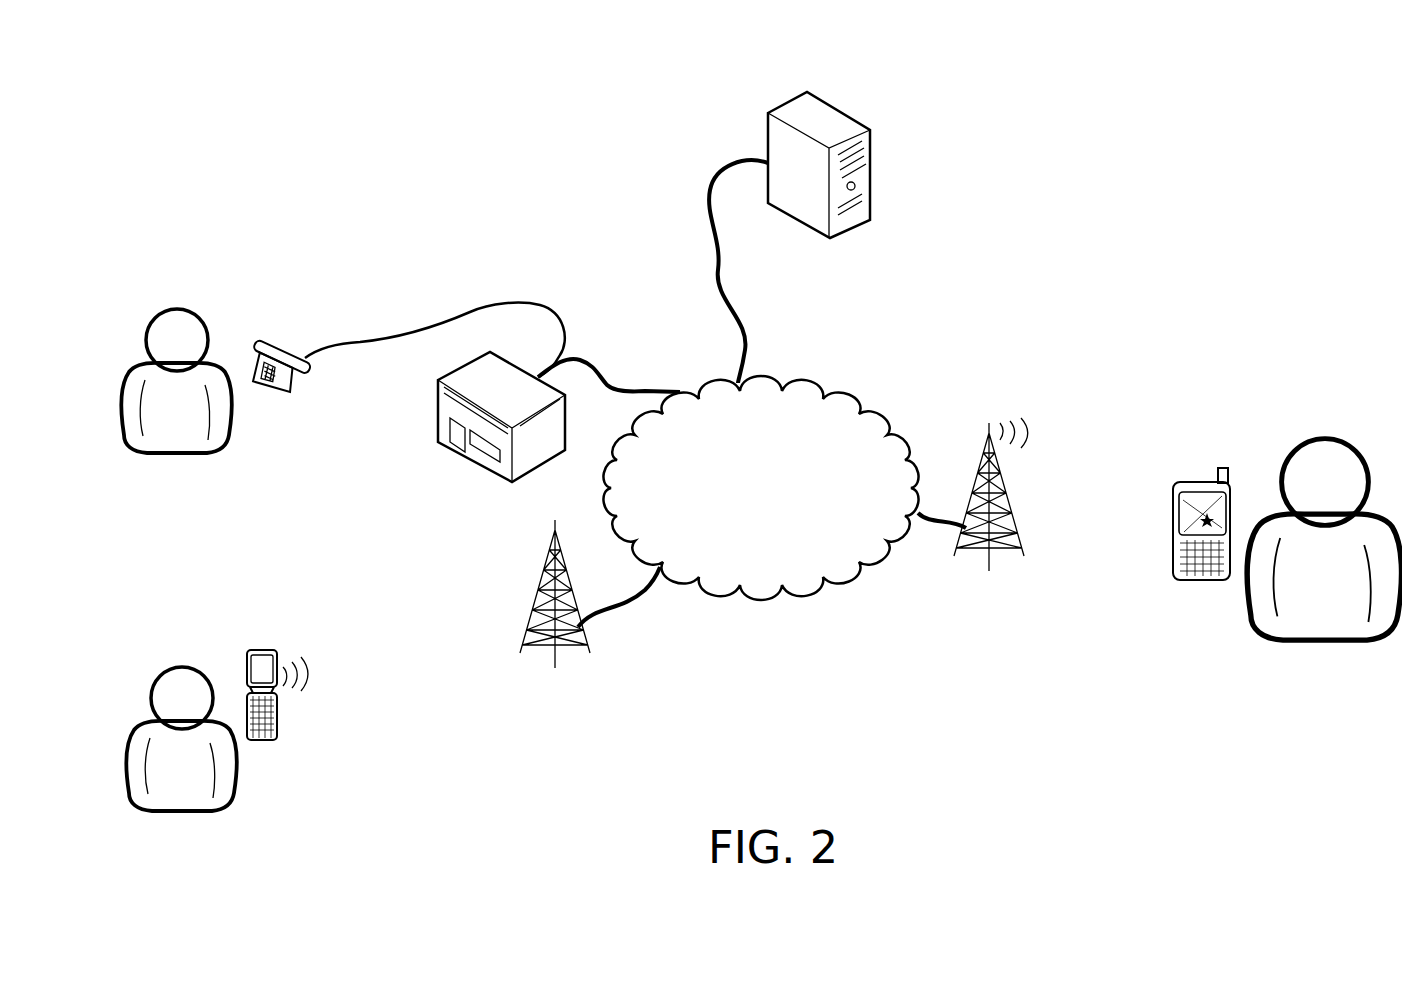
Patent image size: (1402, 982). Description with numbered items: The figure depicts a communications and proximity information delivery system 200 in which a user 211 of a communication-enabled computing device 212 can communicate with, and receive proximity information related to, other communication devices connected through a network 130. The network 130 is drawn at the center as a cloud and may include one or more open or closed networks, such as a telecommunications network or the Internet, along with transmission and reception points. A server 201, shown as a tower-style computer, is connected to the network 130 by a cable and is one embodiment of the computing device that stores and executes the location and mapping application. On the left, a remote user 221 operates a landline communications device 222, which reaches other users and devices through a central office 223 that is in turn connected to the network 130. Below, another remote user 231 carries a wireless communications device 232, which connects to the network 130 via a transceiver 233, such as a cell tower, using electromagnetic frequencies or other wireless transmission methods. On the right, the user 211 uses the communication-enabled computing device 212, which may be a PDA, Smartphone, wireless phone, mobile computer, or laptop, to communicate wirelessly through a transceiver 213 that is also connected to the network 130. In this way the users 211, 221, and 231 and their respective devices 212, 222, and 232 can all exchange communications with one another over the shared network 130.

The communications and proximity information delivery system 200 is at (1166, 168).
The network 130 is at (777, 510).
The server 201 is at (840, 110).
The user 211 is at (1312, 647).
The communication-enabled computing device 212 is at (1197, 482).
The transceiver 213 is at (972, 552).
The remote user 221 is at (180, 455).
The device 222 is at (275, 342).
The central office 223 is at (473, 462).
The remote user 231 is at (233, 782).
The wireless communications device 232 is at (262, 648).
The transceiver 233 is at (563, 655).